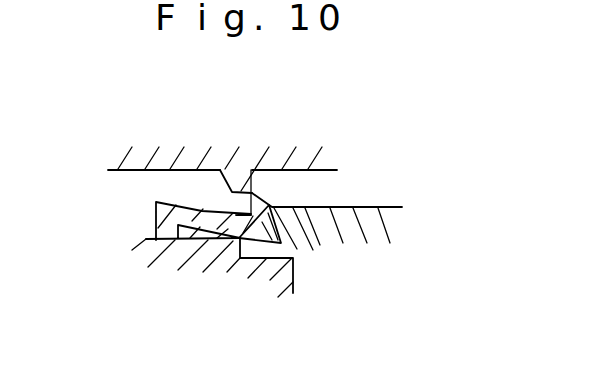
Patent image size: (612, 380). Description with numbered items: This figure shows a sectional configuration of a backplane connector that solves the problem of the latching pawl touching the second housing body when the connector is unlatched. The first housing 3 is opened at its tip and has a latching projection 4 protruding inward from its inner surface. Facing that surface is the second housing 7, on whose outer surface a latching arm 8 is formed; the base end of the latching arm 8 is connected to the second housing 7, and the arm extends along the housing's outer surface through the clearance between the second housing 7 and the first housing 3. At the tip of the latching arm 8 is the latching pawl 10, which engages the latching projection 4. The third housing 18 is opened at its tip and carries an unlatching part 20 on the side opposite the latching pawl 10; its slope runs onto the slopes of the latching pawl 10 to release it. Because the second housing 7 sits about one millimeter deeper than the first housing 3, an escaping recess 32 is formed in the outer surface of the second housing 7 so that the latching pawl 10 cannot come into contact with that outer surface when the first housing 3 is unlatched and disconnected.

The first housing 3 is at (141, 152).
The latching projection 4 is at (230, 190).
The second housing 7 is at (155, 240).
The latching arm 8 is at (195, 210).
The latching pawl 10 is at (266, 258).
The third housing 18 is at (383, 225).
The unlatching part 20 is at (313, 213).
The escaping recess 32 is at (283, 253).